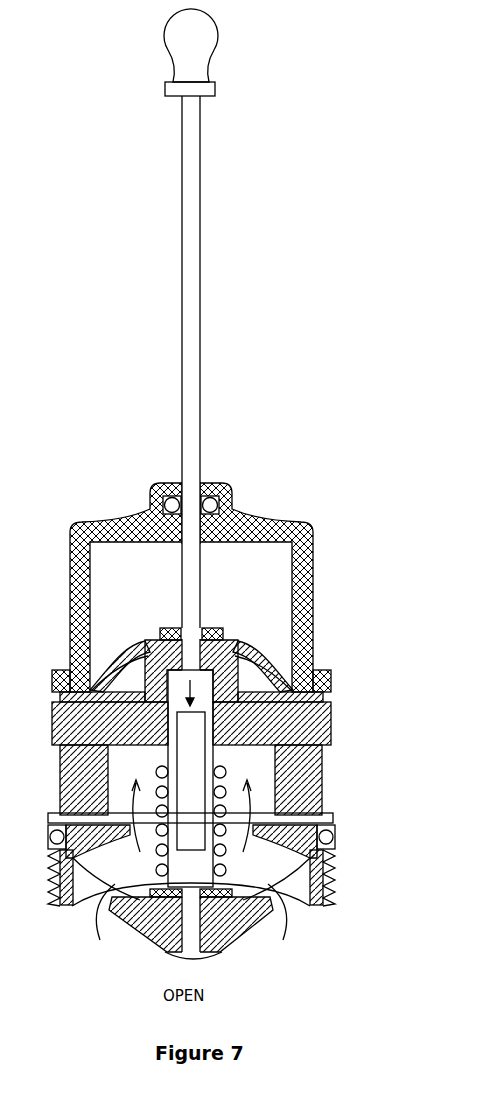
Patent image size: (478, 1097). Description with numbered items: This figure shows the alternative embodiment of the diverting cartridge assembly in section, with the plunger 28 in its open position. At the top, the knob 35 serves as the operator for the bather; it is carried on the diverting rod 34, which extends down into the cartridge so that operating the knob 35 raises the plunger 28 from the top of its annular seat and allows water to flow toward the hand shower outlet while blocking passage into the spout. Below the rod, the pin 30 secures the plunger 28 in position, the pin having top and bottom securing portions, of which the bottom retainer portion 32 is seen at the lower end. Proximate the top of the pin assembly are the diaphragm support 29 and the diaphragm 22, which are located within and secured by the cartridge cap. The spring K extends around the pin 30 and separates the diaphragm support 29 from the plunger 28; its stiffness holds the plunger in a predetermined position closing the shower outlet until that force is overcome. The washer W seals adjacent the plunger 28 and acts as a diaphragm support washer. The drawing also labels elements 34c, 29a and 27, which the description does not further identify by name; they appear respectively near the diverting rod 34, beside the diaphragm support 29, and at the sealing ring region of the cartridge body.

The knob 35 is at (218, 33).
The diverting rod 34 is at (200, 323).
The rod washer 34c is at (177, 626).
The hub washer 29a is at (222, 627).
The diaphragm support 29 is at (240, 645).
The diaphragm 22 is at (247, 660).
The spring K is at (323, 772).
The O-ring 27 is at (334, 837).
The pin 30 is at (190, 778).
The washer W is at (112, 893).
The plunger 28 is at (145, 928).
The bottom retainer portion 32 is at (192, 957).